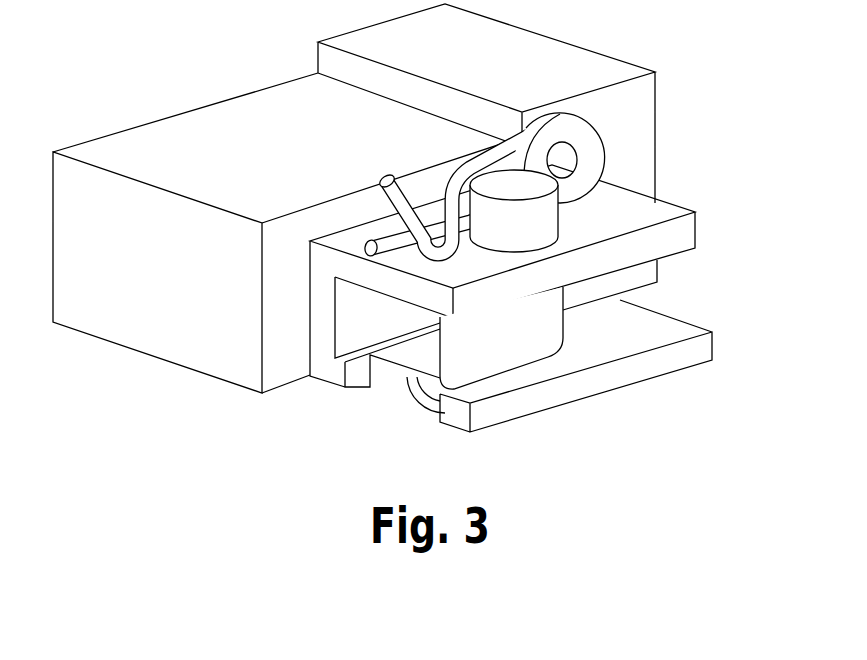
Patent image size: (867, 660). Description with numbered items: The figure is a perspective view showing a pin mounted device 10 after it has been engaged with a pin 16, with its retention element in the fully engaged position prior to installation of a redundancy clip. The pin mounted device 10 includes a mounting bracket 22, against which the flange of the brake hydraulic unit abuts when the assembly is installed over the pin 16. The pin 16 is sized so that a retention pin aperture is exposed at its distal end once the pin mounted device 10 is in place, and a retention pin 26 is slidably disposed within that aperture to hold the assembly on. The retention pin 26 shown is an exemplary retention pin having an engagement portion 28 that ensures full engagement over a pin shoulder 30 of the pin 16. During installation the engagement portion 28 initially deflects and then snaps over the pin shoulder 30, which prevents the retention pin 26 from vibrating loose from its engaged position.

The pin mounted device 10 is at (200, 135).
The pin 16 is at (517, 345).
The mounting bracket 22 is at (583, 265).
The retention pin 26 is at (592, 143).
The engagement portion 28 is at (565, 226).
The pin shoulder 30 is at (462, 207).